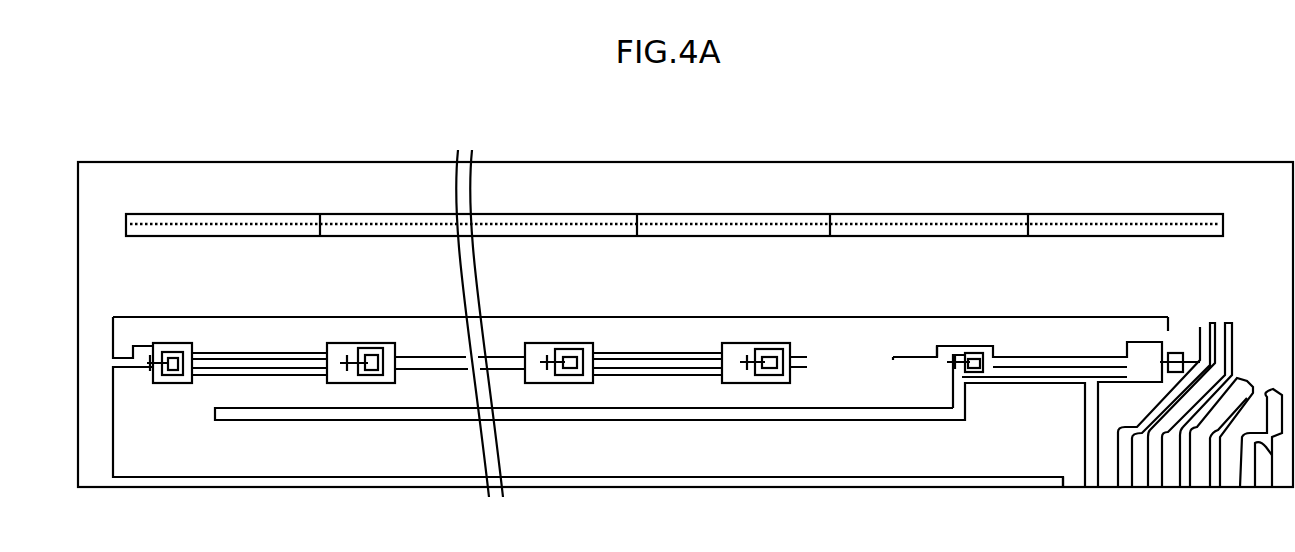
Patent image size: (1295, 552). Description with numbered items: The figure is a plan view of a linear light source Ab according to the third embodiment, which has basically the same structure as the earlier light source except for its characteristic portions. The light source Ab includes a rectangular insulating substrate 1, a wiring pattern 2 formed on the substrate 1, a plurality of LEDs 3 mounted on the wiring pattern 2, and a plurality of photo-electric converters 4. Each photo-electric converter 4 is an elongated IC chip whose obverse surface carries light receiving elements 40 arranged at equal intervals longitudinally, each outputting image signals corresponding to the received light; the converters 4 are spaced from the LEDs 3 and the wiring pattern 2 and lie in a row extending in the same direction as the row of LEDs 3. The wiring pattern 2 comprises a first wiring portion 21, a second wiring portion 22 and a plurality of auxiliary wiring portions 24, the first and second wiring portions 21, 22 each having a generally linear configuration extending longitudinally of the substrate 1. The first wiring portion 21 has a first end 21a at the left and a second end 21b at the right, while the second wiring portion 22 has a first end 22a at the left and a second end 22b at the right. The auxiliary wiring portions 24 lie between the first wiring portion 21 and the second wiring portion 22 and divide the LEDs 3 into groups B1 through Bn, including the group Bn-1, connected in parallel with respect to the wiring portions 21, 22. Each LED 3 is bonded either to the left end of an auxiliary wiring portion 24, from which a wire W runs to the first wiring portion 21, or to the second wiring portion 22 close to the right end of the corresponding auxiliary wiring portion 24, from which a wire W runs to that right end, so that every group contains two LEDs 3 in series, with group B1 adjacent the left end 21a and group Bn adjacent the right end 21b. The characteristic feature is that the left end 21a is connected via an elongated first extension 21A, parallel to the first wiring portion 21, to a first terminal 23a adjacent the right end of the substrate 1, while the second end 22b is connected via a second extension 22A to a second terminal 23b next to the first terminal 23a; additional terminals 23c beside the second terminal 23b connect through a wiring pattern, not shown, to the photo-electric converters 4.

The insulating substrate 1 is at (1250, 176).
The linear light source Ab is at (1226, 134).
The wiring pattern 2 is at (932, 318).
The photo-electric converter 4 is at (338, 222).
The light receiving element 40 is at (370, 222).
The first end of the second wiring portion 22a is at (120, 323).
The first end of the first wiring portion 21a is at (165, 392).
The second end of the second wiring portion 22b is at (1173, 333).
The first wiring portion 21 is at (673, 395).
The second end of the first wiring portion 21b is at (927, 388).
The first extension 21A is at (806, 450).
The first LED group B1 is at (290, 350).
The (n-1)th LED group Bn-1 is at (693, 364).
The nth LED group Bn is at (1102, 357).
The second wiring portion 22 is at (665, 335).
The auxiliary wiring portion 24 is at (250, 360).
The LED 3 is at (178, 358).
The wire W is at (152, 353).
The first terminal 23a is at (1078, 480).
The second terminal 23b is at (1122, 470).
The additional terminal 23c is at (1180, 460).
The second extension 22A is at (1157, 402).